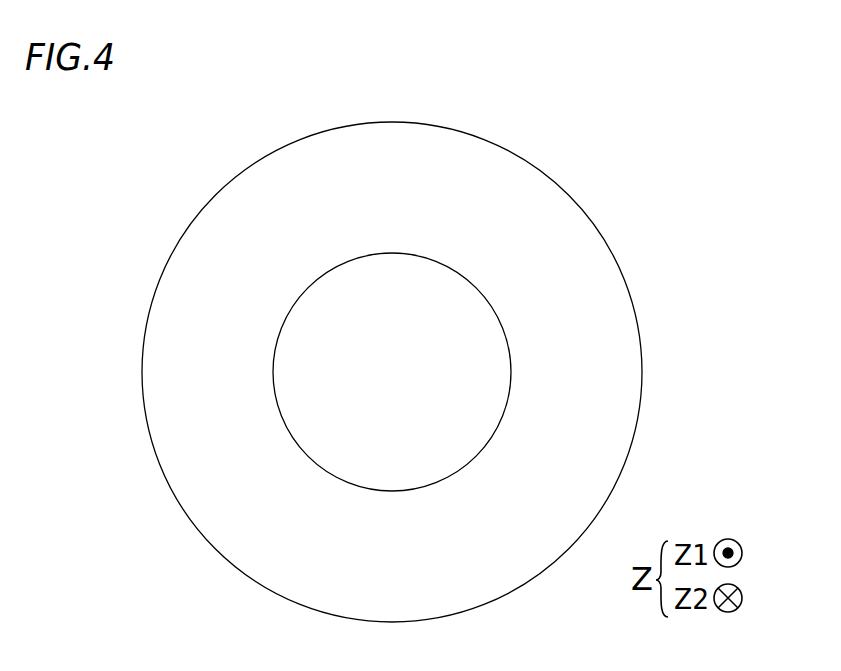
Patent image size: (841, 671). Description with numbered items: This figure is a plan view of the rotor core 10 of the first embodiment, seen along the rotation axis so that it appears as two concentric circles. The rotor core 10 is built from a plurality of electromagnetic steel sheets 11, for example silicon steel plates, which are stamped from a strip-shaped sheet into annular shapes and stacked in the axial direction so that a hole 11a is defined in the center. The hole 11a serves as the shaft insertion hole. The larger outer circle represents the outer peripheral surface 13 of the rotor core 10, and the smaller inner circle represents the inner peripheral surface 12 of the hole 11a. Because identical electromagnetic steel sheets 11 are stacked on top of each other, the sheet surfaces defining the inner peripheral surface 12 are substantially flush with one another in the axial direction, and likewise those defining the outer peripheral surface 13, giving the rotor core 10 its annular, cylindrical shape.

The rotor core 10 is at (191, 98).
The electromagnetic steel sheets 11 is at (262, 190).
The hole 11a is at (336, 280).
The inner peripheral surface 12 is at (273, 371).
The outer peripheral surface 13 is at (189, 224).